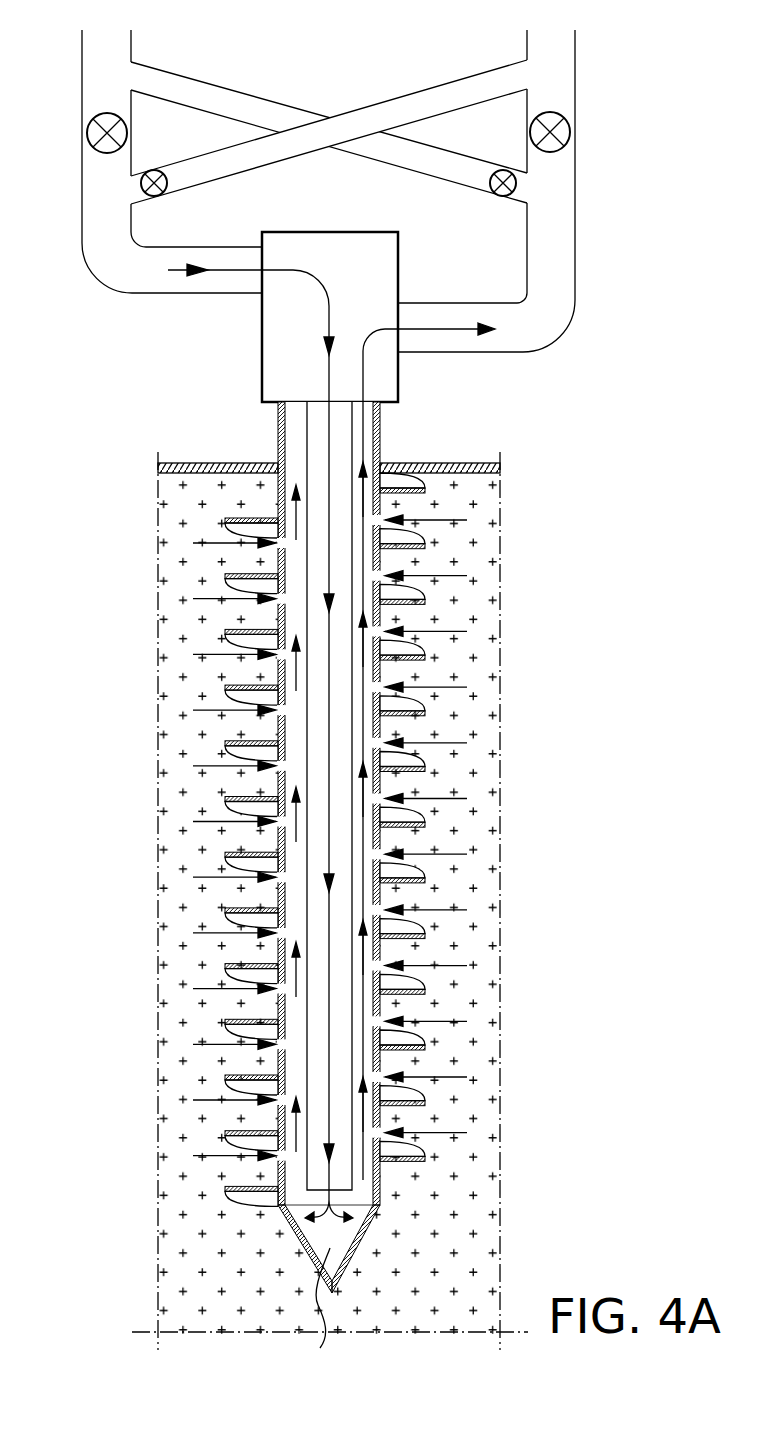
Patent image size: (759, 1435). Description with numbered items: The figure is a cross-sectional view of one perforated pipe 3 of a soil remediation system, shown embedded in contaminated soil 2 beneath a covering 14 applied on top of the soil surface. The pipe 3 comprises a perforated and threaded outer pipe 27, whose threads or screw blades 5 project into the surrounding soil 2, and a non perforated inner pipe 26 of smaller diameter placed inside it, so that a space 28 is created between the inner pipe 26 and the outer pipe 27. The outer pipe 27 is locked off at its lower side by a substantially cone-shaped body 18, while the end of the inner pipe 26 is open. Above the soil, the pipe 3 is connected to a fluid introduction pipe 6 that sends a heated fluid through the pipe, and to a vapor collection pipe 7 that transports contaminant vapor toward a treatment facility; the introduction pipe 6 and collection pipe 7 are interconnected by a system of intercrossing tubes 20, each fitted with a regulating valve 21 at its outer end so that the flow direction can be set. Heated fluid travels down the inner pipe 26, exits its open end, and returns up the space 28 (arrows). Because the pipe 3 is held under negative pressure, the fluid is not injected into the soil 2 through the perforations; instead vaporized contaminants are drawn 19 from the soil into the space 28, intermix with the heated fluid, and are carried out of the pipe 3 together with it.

The contaminated soil 2 is at (492, 547).
The perforated pipe 3 is at (256, 443).
The screw blades 5 is at (227, 1189).
The fluid introduction pipe 6 is at (218, 250).
The vapor collection pipe 7 is at (442, 310).
The covering 14 is at (176, 462).
The cone-shaped body 18 is at (314, 1312).
The drawing of vaporized contaminants 19 is at (461, 688).
The tube 20 is at (207, 95).
The regulating valve 21 is at (88, 133).
The inner pipe 26 is at (354, 1174).
The outer pipe 27 is at (283, 1113).
The space 28 is at (364, 1008).